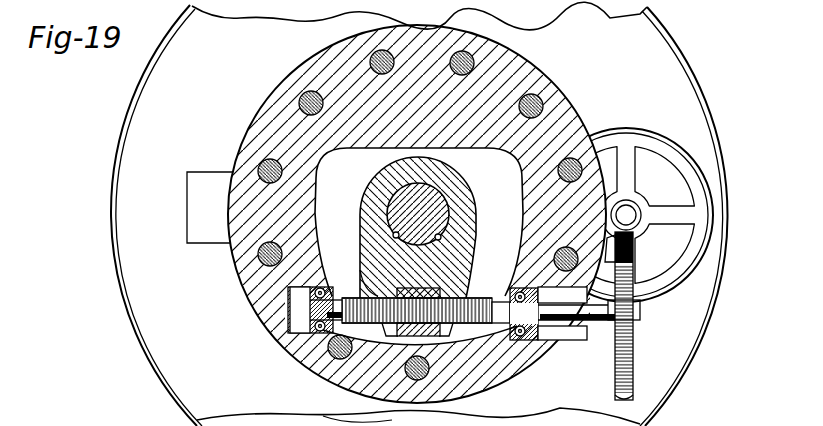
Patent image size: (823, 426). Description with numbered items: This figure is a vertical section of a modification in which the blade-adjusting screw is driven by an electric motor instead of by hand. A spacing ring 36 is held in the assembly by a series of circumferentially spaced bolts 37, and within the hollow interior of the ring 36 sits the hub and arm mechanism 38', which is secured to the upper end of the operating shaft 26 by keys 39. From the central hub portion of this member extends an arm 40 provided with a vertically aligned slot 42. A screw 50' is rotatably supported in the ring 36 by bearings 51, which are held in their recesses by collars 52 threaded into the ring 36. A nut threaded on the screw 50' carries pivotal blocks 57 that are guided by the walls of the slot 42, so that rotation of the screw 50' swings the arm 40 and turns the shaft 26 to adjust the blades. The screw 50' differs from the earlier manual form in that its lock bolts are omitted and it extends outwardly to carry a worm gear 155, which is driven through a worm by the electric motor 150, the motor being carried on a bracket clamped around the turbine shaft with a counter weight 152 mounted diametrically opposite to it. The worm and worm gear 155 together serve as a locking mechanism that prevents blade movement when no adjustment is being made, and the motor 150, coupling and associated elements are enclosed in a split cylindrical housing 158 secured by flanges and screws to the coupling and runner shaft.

The operating shaft 26 is at (403, 200).
The spacing ring 36 is at (287, 77).
The bolts 37 is at (541, 96).
The hub and arm mechanism 38' is at (433, 227).
The keys 39 is at (393, 235).
The arm 40 is at (377, 292).
The slot 42 is at (442, 337).
The screw 50' is at (461, 291).
The bearings 51 is at (312, 337).
The collars 52 is at (300, 330).
The pivotal blocks 57 is at (504, 291).
The electric motor 150 is at (703, 175).
The counter weight 152 is at (197, 236).
The worm gear 155 is at (631, 360).
The cylindrical housing 158 is at (684, 378).